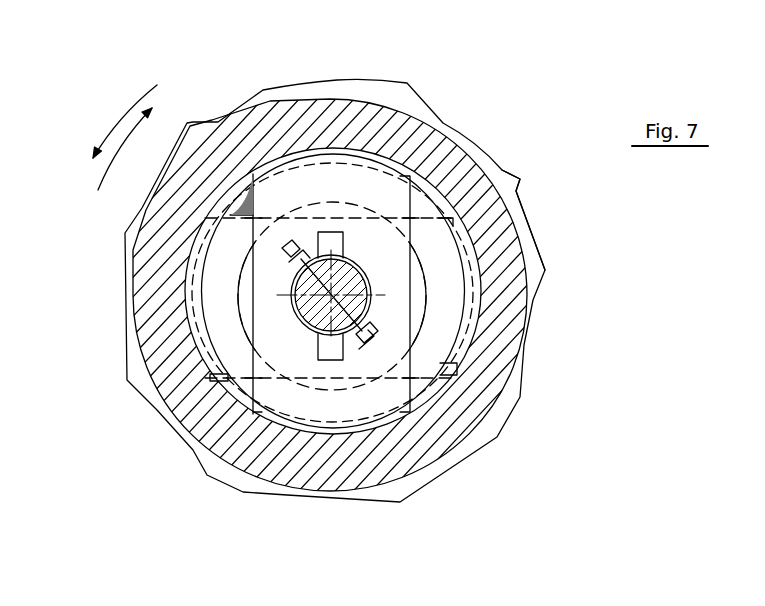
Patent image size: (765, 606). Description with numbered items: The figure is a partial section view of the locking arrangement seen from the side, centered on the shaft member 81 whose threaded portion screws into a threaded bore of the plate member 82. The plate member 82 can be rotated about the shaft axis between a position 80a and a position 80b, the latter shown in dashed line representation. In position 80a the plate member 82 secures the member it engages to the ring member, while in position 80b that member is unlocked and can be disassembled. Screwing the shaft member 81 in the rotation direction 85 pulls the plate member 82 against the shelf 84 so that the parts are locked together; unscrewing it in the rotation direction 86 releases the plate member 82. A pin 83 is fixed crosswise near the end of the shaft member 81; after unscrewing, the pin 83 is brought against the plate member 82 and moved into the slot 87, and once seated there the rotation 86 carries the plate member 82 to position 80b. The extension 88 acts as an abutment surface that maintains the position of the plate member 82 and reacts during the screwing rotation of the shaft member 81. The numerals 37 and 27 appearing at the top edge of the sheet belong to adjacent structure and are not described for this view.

The position 80a is at (348, 127).
The position 80b is at (508, 268).
The plate member 82 is at (393, 160).
The shelf 84 is at (433, 198).
The shaft member 81 is at (330, 296).
The slot 87 is at (320, 357).
The pin 83 is at (368, 345).
The extension 88 is at (245, 207).
The direction 85 is at (117, 115).
The direction 86 is at (102, 175).
The component 37 is at (182, 15).
The component 27 is at (247, 0).